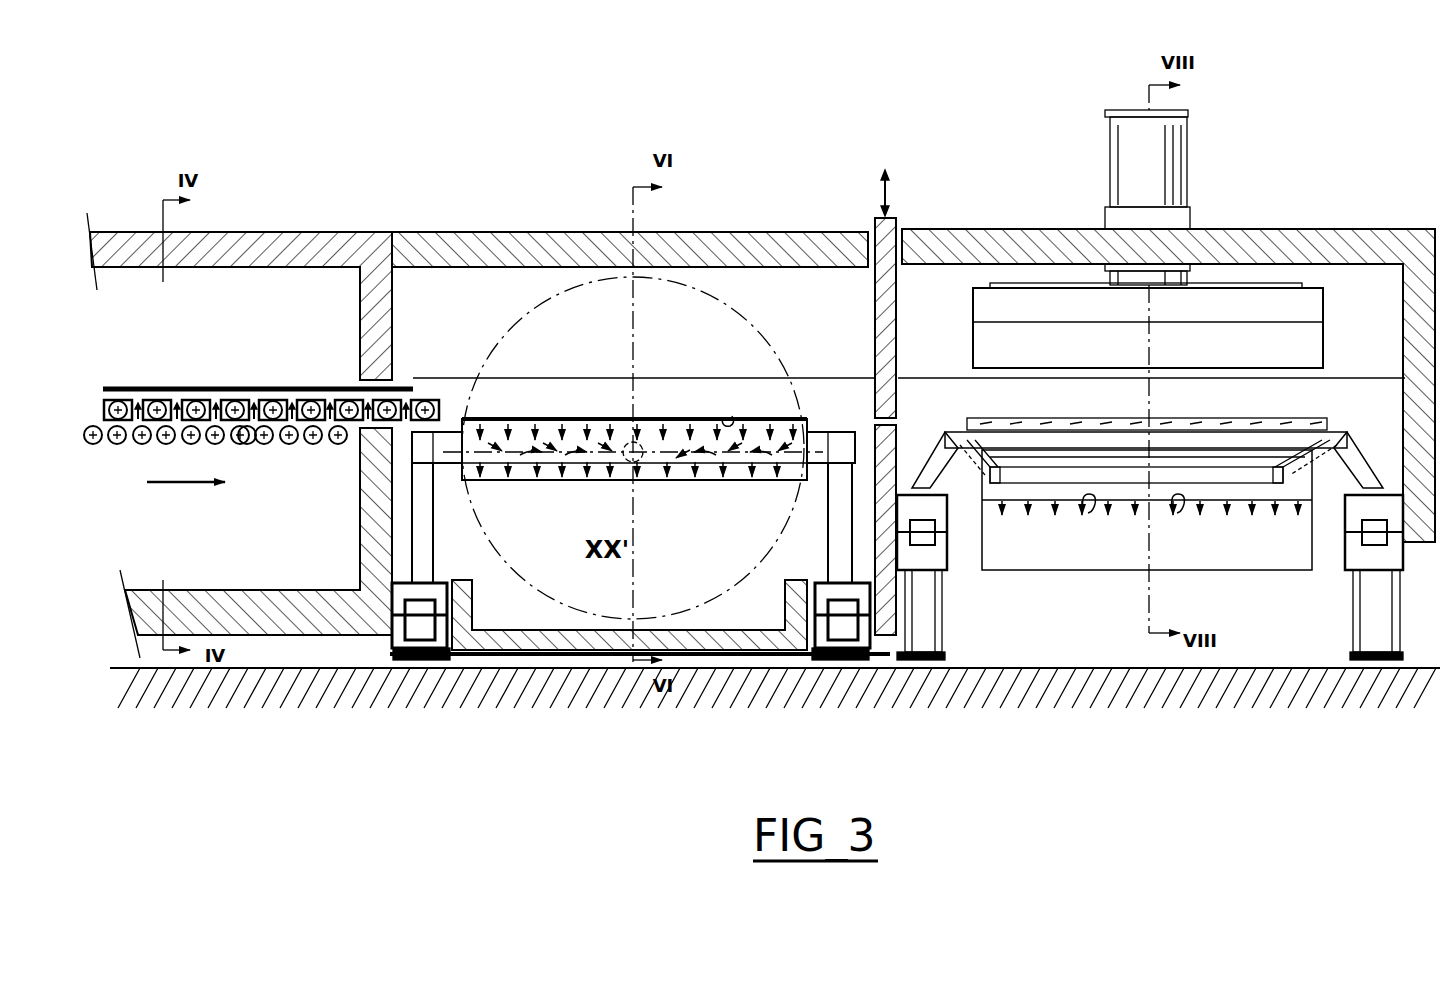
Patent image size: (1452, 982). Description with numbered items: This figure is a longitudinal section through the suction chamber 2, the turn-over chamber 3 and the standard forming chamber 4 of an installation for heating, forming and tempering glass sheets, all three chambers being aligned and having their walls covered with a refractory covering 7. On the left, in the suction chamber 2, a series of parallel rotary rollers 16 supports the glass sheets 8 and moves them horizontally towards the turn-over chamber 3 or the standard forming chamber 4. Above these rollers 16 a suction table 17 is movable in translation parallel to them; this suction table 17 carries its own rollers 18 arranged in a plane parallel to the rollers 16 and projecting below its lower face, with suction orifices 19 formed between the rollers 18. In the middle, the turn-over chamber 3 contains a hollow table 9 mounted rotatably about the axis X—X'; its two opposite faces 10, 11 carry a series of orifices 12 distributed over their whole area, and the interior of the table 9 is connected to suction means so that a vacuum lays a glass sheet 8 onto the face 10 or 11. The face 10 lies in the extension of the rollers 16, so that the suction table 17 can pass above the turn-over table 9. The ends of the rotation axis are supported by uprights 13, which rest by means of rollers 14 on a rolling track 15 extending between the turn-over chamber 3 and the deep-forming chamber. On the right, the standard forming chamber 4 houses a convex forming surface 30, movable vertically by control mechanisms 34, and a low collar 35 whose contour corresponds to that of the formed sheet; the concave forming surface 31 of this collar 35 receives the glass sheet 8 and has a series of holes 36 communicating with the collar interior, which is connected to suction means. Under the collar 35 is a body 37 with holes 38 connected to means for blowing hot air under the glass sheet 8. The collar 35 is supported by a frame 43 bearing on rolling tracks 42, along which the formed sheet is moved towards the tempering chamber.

The suction chamber 2 is at (283, 293).
The turn-over chamber 3 is at (758, 297).
The standard forming chamber 4 is at (1340, 283).
The refractory covering 7 is at (229, 233).
The glass sheet 8 is at (652, 418).
The table 9 is at (573, 480).
The face 10 is at (728, 420).
The face 11 is at (683, 480).
The orifices 12 is at (590, 425).
The uprights 13 is at (422, 545).
The rollers 14 is at (473, 610).
The rolling track 15 is at (420, 660).
The rotary rollers 16 is at (152, 443).
The suction table 17 is at (240, 383).
The rollers 18 is at (427, 403).
The suction orifices 19 is at (247, 443).
The convex forming surface 30 is at (1320, 368).
The concave forming surface 31 is at (1210, 430).
The control mechanisms 34 is at (1165, 175).
The collar 35 is at (1077, 425).
The holes 36 is at (1150, 437).
The body 37 is at (1245, 555).
The holes 38 is at (1090, 503).
The rolling tracks 42 is at (945, 560).
The frame 43 is at (935, 455).